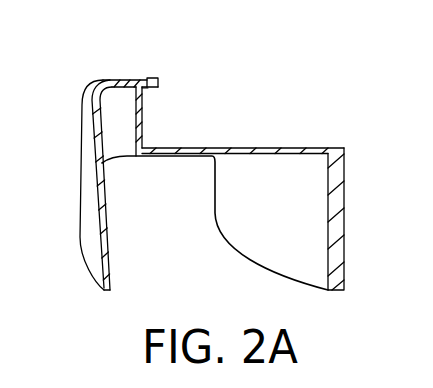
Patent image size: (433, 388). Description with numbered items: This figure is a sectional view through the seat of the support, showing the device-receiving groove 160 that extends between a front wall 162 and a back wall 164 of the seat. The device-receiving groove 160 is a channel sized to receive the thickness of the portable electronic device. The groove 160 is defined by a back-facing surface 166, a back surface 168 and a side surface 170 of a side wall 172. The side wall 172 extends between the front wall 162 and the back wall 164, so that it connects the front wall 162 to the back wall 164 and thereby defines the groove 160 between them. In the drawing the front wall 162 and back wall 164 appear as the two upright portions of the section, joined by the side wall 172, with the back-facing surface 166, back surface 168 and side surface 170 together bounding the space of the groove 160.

The device-receiving groove 160 is at (181, 126).
The front wall 162 is at (152, 78).
The back wall 164 is at (300, 152).
The back-facing surface 166 is at (148, 88).
The back surface 168 is at (270, 148).
The side surface 170 is at (145, 128).
The side wall 172 is at (138, 107).